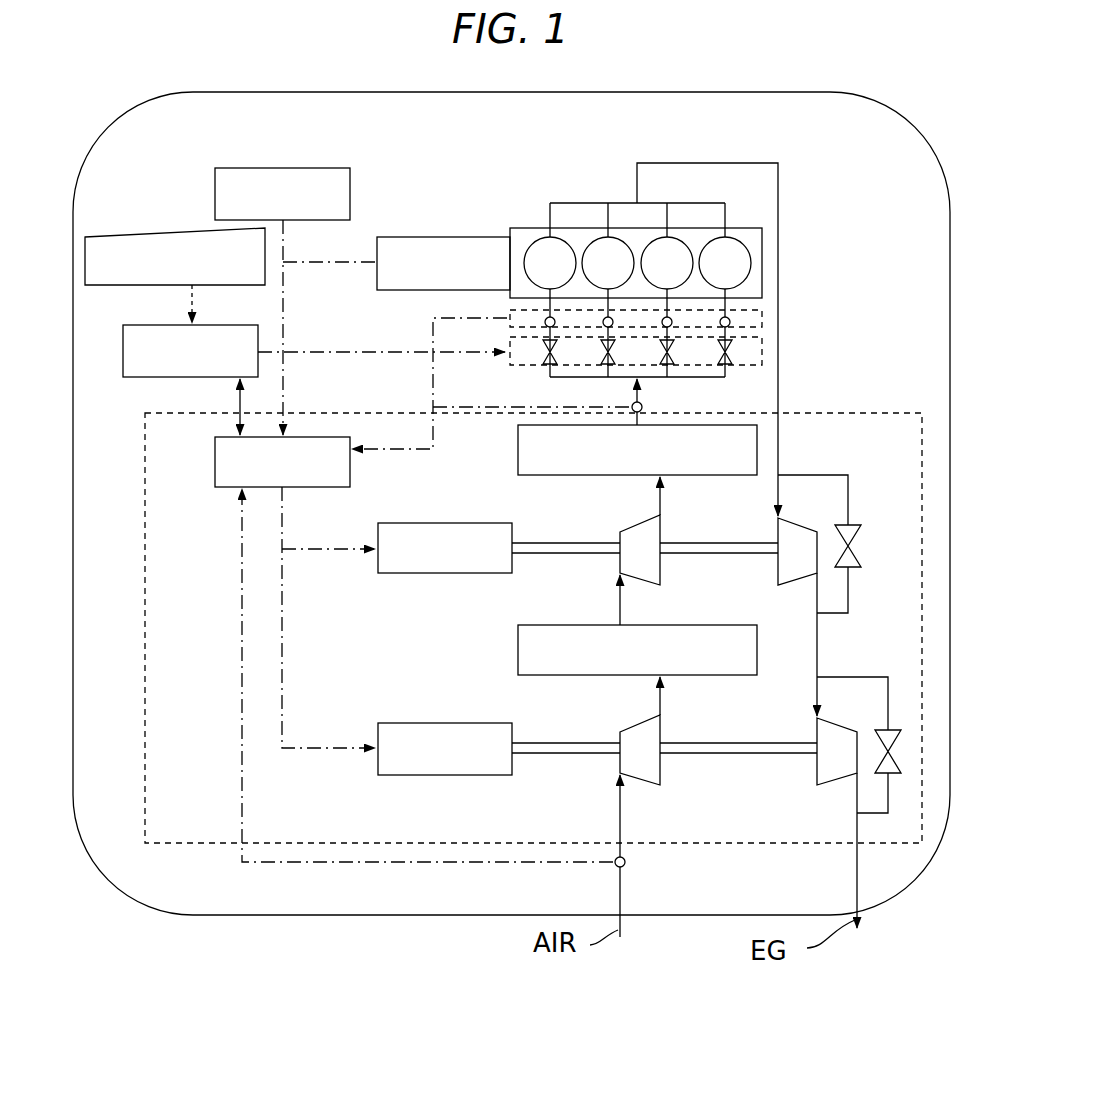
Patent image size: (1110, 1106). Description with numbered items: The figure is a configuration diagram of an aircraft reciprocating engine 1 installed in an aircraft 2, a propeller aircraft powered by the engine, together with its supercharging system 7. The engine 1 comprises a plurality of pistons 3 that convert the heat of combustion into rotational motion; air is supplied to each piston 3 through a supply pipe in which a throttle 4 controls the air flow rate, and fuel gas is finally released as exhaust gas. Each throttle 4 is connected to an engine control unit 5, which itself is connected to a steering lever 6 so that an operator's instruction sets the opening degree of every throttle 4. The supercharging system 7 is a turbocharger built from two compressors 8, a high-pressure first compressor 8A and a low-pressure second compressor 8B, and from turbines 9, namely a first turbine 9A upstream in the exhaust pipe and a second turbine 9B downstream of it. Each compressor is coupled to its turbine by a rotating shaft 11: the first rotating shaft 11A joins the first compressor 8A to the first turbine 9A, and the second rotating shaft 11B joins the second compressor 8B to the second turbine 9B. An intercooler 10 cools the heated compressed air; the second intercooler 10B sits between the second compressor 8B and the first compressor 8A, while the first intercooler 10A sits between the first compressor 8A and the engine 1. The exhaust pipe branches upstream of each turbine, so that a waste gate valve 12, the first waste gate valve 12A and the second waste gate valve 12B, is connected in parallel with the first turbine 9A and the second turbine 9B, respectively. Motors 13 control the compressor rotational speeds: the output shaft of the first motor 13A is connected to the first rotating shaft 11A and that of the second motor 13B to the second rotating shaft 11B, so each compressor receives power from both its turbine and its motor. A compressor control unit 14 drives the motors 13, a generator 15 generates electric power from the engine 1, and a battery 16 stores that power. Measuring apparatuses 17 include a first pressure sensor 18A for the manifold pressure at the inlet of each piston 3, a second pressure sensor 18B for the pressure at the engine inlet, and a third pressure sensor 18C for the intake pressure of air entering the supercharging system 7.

The aircraft reciprocating engine 1 is at (633, 260).
The aircraft 2 is at (664, 89).
The piston 3 is at (738, 243).
The throttle 4 is at (547, 357).
The engine control unit 5 is at (138, 377).
The steering lever 6 is at (108, 285).
The supercharging system 7 is at (873, 411).
The compressor 8 is at (674, 707).
The first compressor 8A is at (662, 533).
The second compressor 8B is at (662, 733).
The turbine 9 is at (800, 678).
The first turbine 9A is at (797, 587).
The second turbine 9B is at (838, 787).
The intercooler 10 is at (593, 575).
The first intercooler 10A is at (583, 475).
The second intercooler 10B is at (578, 675).
The rotating shaft 11 is at (663, 686).
The first rotating shaft 11A is at (562, 555).
The second rotating shaft 11B is at (562, 755).
The waste gate valve 12 is at (845, 630).
The first waste gate valve 12A is at (850, 570).
The second waste gate valve 12B is at (888, 730).
The motor 13 is at (432, 681).
The first motor 13A is at (438, 573).
The second motor 13B is at (437, 775).
The compressor control unit 14 is at (312, 487).
The generator 15 is at (447, 237).
The battery 16 is at (293, 168).
The measuring apparatuses 17 is at (675, 340).
The first pressure sensor 18A is at (731, 322).
The second pressure sensor 18B is at (644, 406).
The third pressure sensor 18C is at (626, 863).